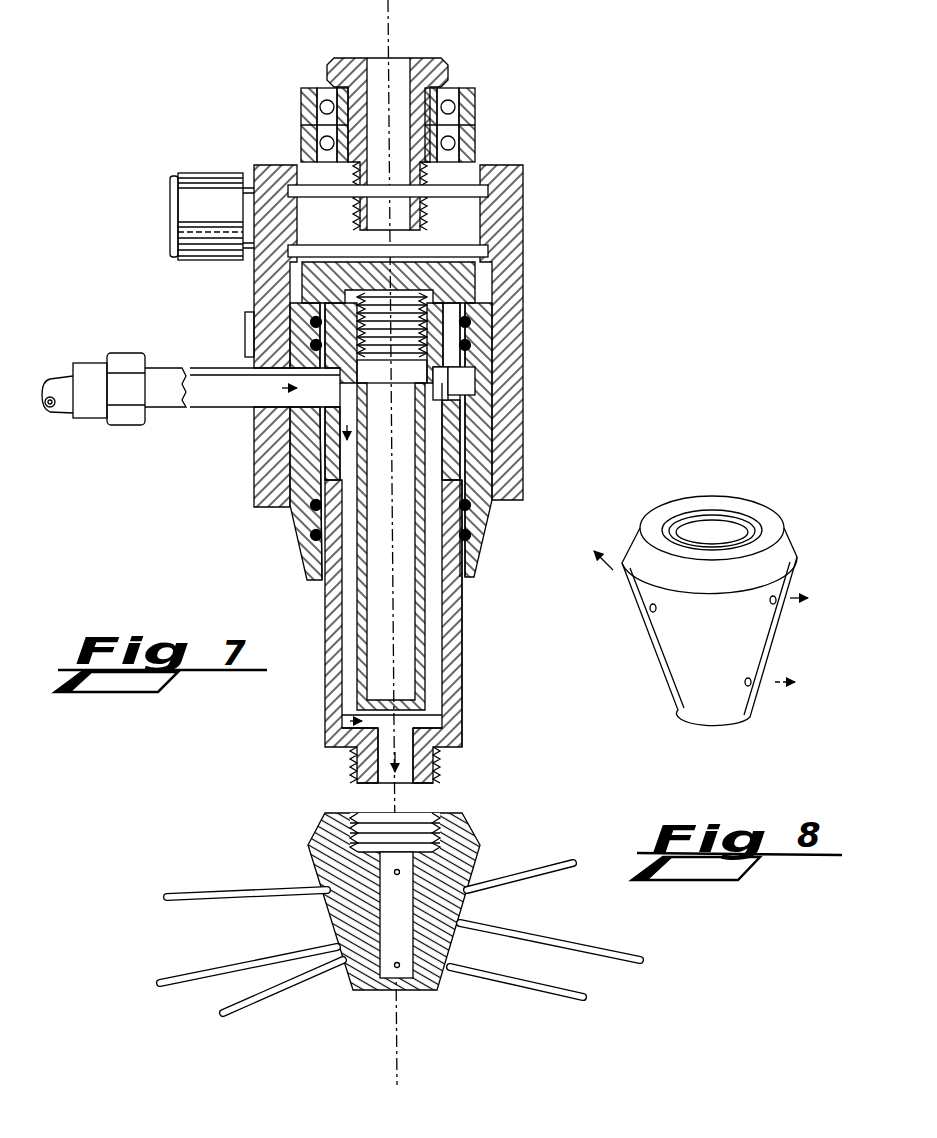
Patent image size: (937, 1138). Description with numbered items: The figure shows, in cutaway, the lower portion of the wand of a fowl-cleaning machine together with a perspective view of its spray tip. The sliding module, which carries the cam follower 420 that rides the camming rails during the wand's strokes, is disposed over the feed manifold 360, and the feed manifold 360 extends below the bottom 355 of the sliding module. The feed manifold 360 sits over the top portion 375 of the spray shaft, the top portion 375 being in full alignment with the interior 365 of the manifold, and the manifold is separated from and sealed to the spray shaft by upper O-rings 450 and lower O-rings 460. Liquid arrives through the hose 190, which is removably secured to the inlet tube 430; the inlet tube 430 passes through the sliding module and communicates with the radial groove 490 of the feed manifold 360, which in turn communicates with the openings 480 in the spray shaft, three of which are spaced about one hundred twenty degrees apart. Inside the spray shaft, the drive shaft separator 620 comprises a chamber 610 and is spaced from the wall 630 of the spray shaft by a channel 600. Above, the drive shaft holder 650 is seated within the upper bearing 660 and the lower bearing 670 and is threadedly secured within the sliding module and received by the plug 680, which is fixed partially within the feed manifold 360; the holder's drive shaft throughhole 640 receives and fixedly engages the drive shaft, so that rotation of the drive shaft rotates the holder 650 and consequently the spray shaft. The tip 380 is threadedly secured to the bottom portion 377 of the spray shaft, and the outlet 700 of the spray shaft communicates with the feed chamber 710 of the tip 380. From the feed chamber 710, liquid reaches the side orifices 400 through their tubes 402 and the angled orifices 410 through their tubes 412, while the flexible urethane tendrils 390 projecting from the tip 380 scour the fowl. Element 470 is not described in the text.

In FIG. 7, the hose 190 is at (63, 374).
In FIG. 7, the bottom of sliding module 355 is at (295, 520).
In FIG. 7, the feed manifold 360 is at (487, 555).
In FIG. 7, the interior of feed manifold 365 is at (500, 450).
In FIG. 7, the top portion of spray shaft 375 is at (305, 265).
In FIG. 7, the bottom portion of spray shaft 377 is at (430, 780).
In FIG. 7, the tip 380 is at (413, 990).
In FIG. 8, the tip 380 is at (705, 718).
In FIG. 7, the tendrils 390 is at (250, 1008).
In FIG. 8, the side orifices 400 is at (776, 600).
In FIG. 7, the tubes 402 is at (407, 960).
In FIG. 8, the angled orifices 410 is at (650, 608).
In FIG. 7, the tubes 412 is at (325, 855).
In FIG. 7, the cam follower 420 is at (208, 193).
In FIG. 7, the inlet tube 430 is at (193, 413).
In FIG. 7, the upper O-rings 450 is at (316, 322).
In FIG. 7, the lower O-rings 460 is at (316, 535).
In FIG. 7, the inner sleeve 470 is at (330, 395).
In FIG. 7, the openings 480 is at (318, 430).
In FIG. 7, the radial groove 490 is at (470, 375).
In FIG. 7, the channel 600 is at (350, 615).
In FIG. 7, the chamber 610 is at (350, 710).
In FIG. 7, the drive shaft separator 620 is at (427, 662).
In FIG. 7, the wall of spray shaft 630 is at (458, 738).
In FIG. 7, the drive shaft throughhole 640 is at (395, 63).
In FIG. 7, the drive shaft holder 650 is at (448, 72).
In FIG. 7, the upper bearing 660 is at (455, 107).
In FIG. 7, the lower bearing 670 is at (455, 143).
In FIG. 7, the plug 680 is at (470, 268).
In FIG. 7, the outlet 700 is at (382, 784).
In FIG. 7, the feed chamber 710 is at (462, 823).